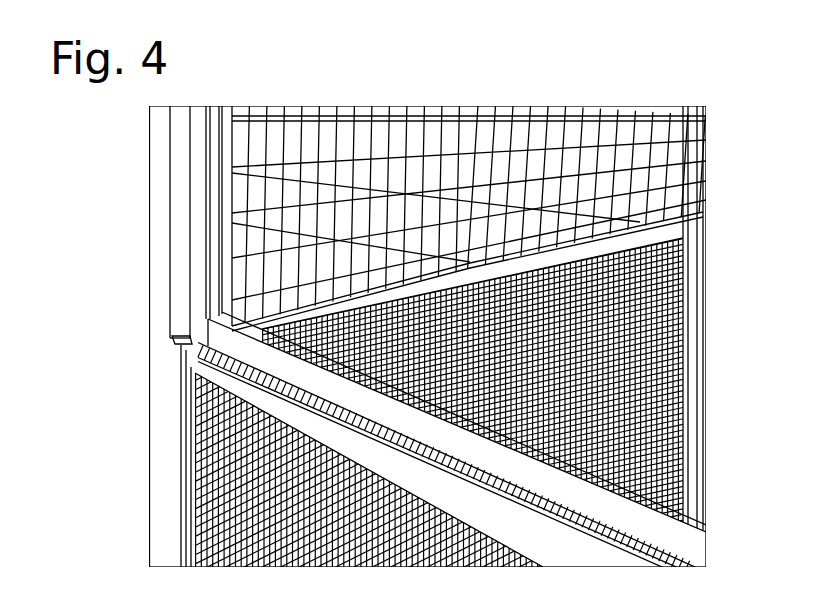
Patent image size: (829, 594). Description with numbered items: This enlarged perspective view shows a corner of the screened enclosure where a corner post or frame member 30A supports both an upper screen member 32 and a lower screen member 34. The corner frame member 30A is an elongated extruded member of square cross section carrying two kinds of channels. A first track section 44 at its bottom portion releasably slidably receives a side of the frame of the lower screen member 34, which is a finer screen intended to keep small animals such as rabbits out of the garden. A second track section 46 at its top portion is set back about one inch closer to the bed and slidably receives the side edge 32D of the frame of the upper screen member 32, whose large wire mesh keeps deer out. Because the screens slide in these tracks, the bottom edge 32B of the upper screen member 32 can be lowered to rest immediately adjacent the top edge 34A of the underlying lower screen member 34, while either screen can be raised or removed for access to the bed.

The corner post or frame member 30A is at (165, 303).
The upper screen member 32 is at (387, 172).
The bottom edge 32B is at (597, 494).
The side edge 32D is at (213, 155).
The lower screen member 34 is at (203, 495).
The top edge 34A is at (565, 557).
The first track section 44 is at (173, 338).
The second track section 46 is at (197, 245).